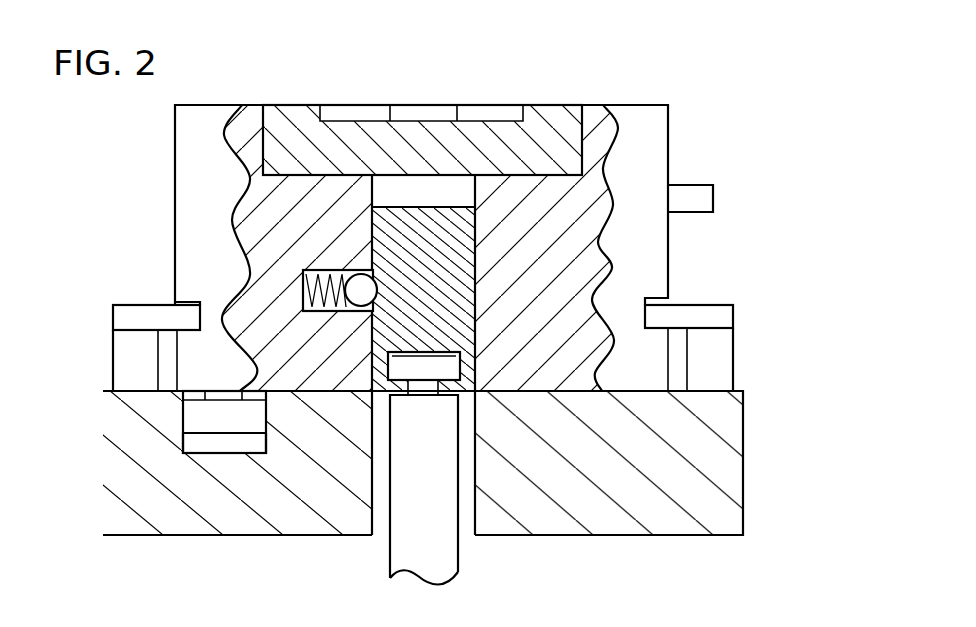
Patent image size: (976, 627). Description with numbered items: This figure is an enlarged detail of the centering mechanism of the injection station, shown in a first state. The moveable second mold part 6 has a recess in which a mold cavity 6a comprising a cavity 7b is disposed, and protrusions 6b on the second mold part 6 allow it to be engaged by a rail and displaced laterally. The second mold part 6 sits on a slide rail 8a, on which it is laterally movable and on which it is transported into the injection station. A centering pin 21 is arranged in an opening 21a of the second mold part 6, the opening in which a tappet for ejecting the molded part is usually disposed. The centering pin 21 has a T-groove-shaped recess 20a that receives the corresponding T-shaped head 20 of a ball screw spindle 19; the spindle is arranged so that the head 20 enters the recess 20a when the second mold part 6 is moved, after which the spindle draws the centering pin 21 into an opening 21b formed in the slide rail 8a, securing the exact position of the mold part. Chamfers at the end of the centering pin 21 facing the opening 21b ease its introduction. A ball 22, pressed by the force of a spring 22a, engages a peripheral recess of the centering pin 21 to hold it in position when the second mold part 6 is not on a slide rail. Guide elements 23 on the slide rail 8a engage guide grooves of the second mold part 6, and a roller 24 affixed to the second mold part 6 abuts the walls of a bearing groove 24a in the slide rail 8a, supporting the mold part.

The second mold part 6 is at (672, 129).
The mold cavity 6a is at (585, 102).
The protrusions 6b is at (716, 197).
The cavity 7b is at (362, 100).
The slide rail 8a is at (748, 499).
The ball screw spindle 19 is at (388, 560).
The T-shaped head 20 is at (468, 369).
The T-groove-shaped recess 20a is at (470, 353).
The centering pin 21 is at (480, 246).
The opening 21a is at (482, 188).
The opening 21b is at (472, 468).
The ball 22 is at (333, 268).
The spring 22a is at (300, 286).
The guide elements 23 is at (112, 302).
The roller 24 is at (173, 408).
The bearing groove 24a is at (181, 448).